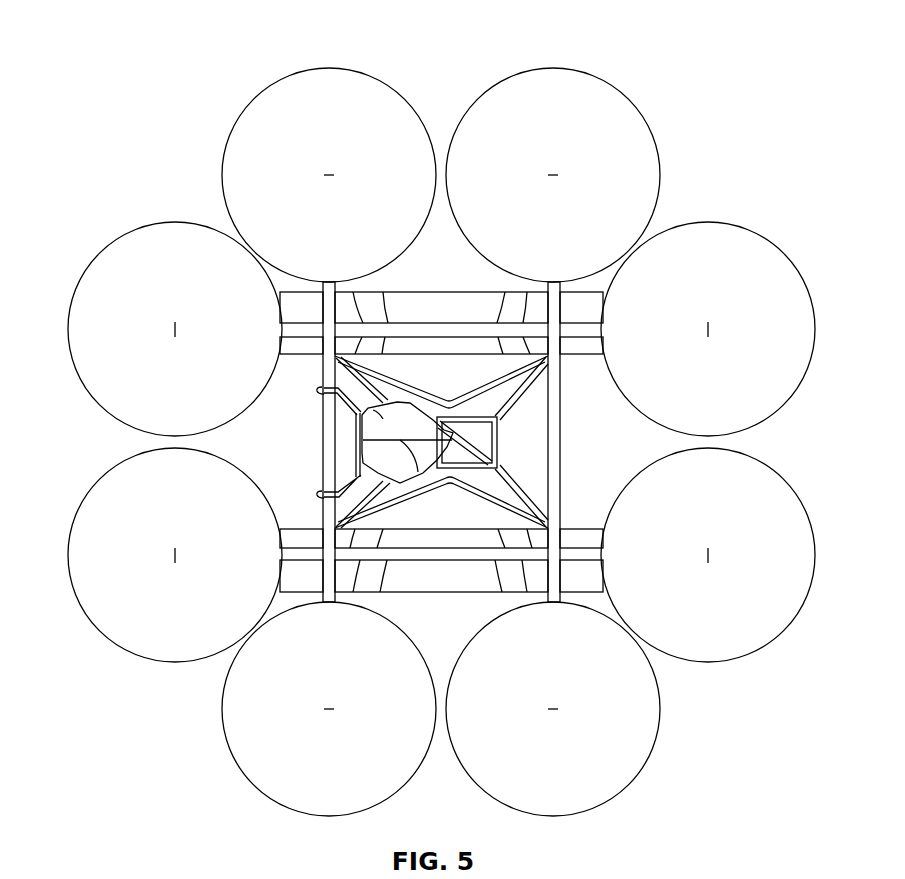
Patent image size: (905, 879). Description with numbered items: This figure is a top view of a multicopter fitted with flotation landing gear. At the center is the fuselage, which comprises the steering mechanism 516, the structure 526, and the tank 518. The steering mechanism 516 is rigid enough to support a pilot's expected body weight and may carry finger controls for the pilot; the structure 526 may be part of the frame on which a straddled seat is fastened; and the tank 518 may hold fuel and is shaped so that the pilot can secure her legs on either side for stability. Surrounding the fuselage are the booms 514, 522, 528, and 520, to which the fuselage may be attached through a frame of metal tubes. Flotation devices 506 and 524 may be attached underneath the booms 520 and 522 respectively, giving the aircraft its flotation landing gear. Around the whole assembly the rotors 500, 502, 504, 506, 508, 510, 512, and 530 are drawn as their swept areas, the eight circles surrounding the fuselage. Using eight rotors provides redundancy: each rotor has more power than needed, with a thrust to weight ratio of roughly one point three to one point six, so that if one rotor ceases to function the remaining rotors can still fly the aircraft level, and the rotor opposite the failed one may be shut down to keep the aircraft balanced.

The rotor 500 is at (97, 482).
The rotor 502 is at (172, 222).
The rotor 504 is at (326, 68).
The rotor / flotation device 506 is at (553, 68).
The rotor 508 is at (712, 222).
The rotor 510 is at (786, 482).
The rotor 512 is at (652, 752).
The boom 514 is at (322, 444).
The steering mechanism 516 is at (322, 497).
The tank 518 is at (394, 442).
The boom 520 is at (457, 338).
The boom 522 is at (458, 548).
The flotation device 524 is at (460, 592).
The structure 526 is at (497, 433).
The boom 528 is at (563, 448).
The rotor 530 is at (226, 740).